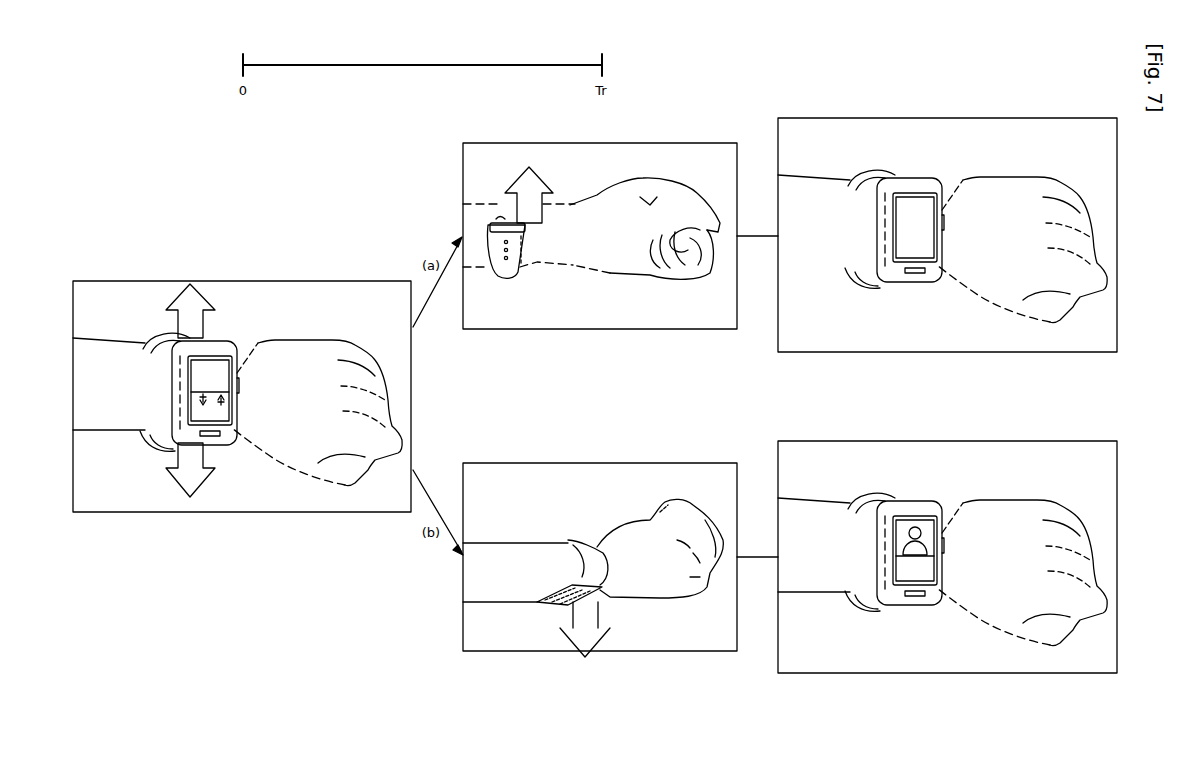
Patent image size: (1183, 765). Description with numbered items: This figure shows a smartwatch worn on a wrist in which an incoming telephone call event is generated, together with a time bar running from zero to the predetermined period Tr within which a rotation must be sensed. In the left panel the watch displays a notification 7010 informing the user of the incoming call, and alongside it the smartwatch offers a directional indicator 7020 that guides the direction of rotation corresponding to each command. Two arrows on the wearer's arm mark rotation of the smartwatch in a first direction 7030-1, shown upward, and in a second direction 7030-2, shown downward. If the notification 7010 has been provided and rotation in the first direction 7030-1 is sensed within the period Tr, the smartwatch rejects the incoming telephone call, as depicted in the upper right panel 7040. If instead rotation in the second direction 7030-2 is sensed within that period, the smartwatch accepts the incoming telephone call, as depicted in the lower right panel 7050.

The notification 7010 is at (223, 370).
The directional indicator 7020 is at (230, 400).
The first direction 7030-1 is at (194, 300).
The second direction 7030-2 is at (198, 483).
The rejection of incoming telephone call 7040 is at (942, 210).
The acceptance of incoming telephone call 7050 is at (932, 532).